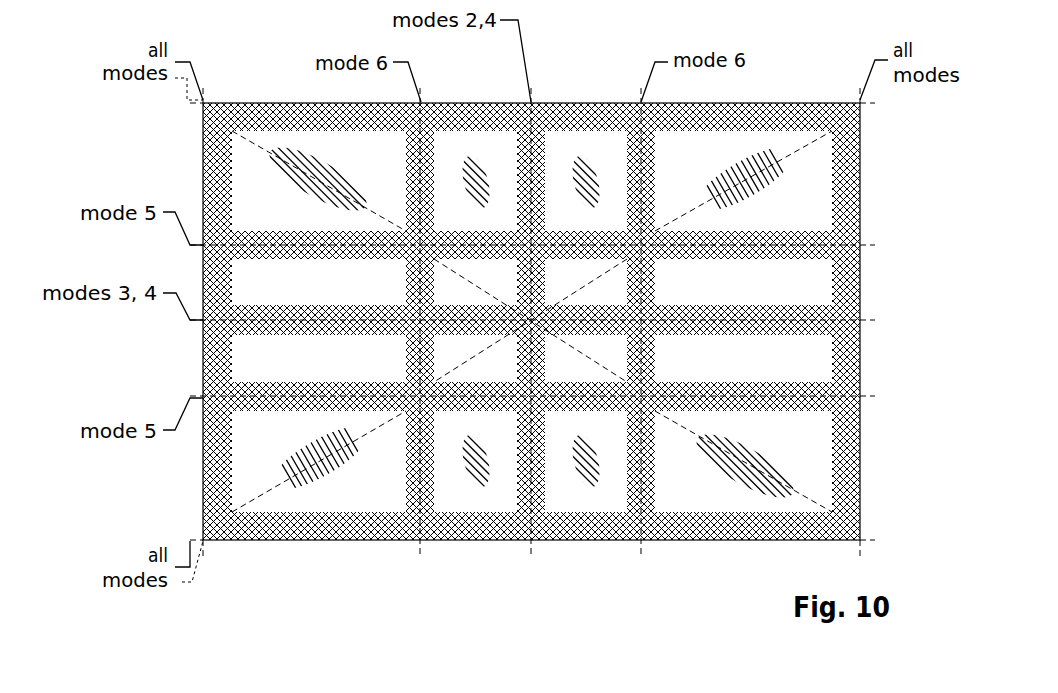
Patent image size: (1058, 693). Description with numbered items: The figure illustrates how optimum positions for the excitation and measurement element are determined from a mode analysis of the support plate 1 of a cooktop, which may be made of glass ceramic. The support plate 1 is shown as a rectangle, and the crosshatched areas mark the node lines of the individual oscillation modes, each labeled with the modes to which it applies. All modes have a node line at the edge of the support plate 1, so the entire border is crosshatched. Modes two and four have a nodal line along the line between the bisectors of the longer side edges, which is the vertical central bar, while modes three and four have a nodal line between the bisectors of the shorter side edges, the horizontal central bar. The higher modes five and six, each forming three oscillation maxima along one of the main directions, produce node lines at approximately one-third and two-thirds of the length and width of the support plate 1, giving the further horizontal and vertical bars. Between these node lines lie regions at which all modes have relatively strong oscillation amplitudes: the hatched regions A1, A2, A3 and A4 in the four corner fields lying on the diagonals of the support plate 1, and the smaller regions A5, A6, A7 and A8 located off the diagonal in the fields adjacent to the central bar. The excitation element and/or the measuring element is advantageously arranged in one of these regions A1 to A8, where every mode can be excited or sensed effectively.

The support plate 1 is at (861, 195).
The region A1 is at (313, 160).
The region A2 is at (332, 476).
The region A3 is at (763, 452).
The region A4 is at (778, 178).
The region A5 is at (478, 470).
The region A6 is at (585, 470).
The region A7 is at (475, 182).
The region A8 is at (586, 182).